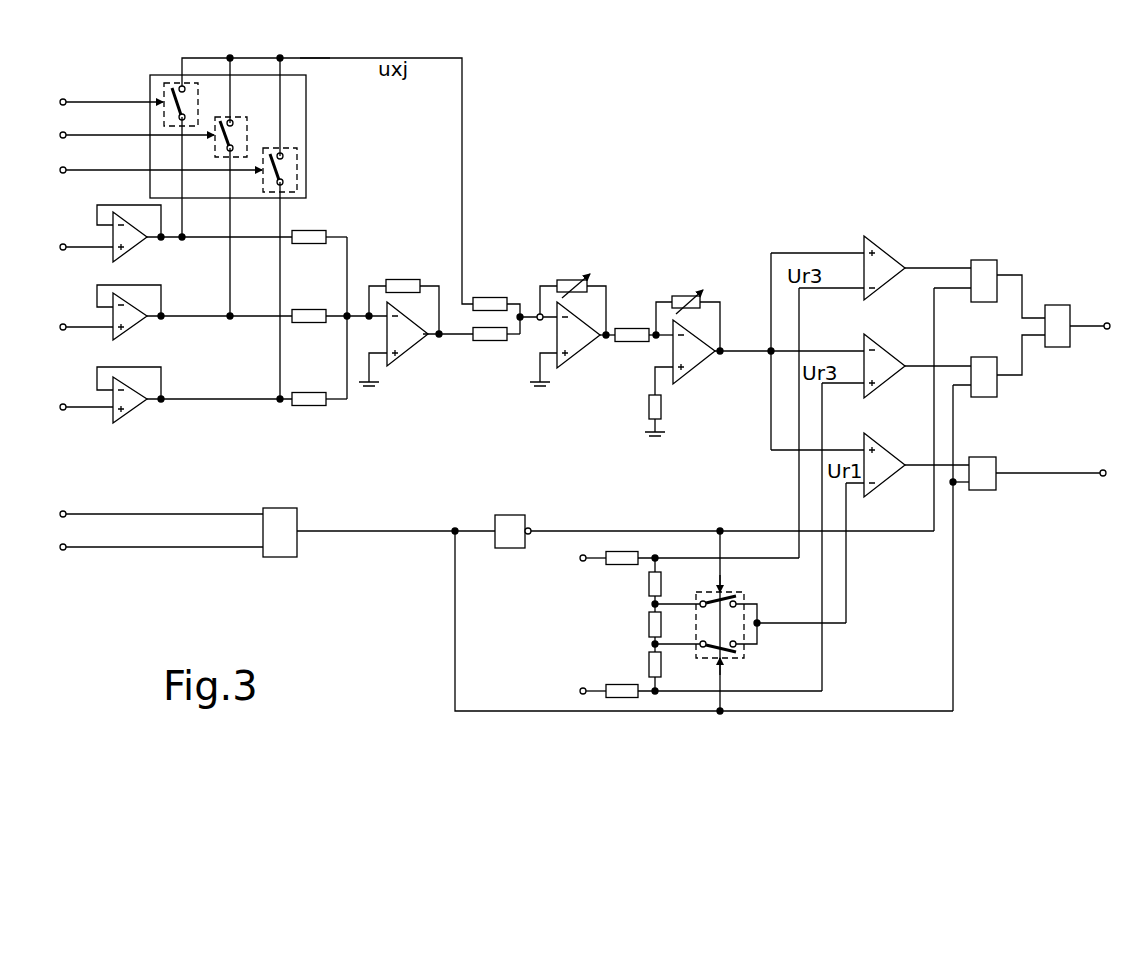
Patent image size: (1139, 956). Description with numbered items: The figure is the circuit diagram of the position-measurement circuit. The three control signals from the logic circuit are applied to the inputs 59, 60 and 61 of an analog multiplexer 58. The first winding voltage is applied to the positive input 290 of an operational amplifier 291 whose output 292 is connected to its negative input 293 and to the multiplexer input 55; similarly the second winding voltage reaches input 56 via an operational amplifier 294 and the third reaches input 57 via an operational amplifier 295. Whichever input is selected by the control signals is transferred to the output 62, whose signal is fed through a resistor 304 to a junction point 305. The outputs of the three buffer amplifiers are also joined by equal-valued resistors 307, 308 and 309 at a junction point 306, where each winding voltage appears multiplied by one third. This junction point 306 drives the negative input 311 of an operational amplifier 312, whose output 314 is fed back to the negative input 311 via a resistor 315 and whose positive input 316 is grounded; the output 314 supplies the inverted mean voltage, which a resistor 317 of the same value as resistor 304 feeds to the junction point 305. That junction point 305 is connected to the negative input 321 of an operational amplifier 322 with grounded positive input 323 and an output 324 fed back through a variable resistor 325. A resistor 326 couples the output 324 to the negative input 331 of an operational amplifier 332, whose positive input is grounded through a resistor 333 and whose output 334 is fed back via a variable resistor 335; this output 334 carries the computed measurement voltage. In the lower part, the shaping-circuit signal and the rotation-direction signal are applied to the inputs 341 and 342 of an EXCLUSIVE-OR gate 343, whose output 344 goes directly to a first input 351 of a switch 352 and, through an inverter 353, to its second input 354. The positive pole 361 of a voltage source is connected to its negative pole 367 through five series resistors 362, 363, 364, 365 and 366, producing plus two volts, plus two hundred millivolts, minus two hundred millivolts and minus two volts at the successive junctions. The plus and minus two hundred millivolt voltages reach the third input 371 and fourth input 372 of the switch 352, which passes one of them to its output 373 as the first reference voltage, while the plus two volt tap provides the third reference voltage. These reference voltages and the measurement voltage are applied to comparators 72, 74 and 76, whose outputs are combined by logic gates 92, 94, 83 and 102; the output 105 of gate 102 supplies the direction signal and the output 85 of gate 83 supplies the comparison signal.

The input of the analog multiplexer 55 is at (184, 202).
The input of the analog multiplexer 56 is at (232, 202).
The input of the analog multiplexer 57 is at (282, 202).
The analog multiplexer 58 is at (306, 118).
The input of the analog multiplexer 59 is at (113, 100).
The input of the analog multiplexer 60 is at (137, 132).
The input of the analog multiplexer 61 is at (162, 167).
The output of the analog multiplexer 62 is at (283, 57).
The comparator 72 is at (888, 263).
The comparator 74 is at (888, 357).
The comparator 76 is at (888, 455).
The logic gate 83 is at (990, 458).
The output of the gate 85 is at (996, 492).
The logic gate 92 is at (1000, 263).
The logic gate 94 is at (990, 355).
The logic gate 102 is at (1067, 349).
The output of the gate 105 is at (1078, 322).
The positive input of the operational amplifier 290 is at (110, 250).
The operational amplifier 291 is at (131, 250).
The output of the operational amplifier 292 is at (152, 240).
The negative input of the operational amplifier 293 is at (107, 225).
The operational amplifier 294 is at (136, 328).
The operational amplifier 295 is at (132, 412).
The resistor 304 is at (488, 297).
The junction point 305 is at (522, 311).
The junction point 306 is at (350, 302).
The resistor 307 is at (322, 231).
The resistor 308 is at (306, 309).
The resistor 309 is at (306, 392).
The negative input of the operational amplifier 311 is at (372, 330).
The operational amplifier 312 is at (405, 358).
The output of the operational amplifier 314 is at (430, 342).
The resistor 315 is at (411, 279).
The positive input of the operational amplifier 316 is at (381, 388).
The resistor 317 is at (490, 342).
The negative input of the operational amplifier 321 is at (540, 332).
The operational amplifier 322 is at (583, 360).
The positive input of the operational amplifier 323 is at (550, 388).
The output of the operational amplifier 324 is at (606, 340).
The variable resistor 325 is at (573, 287).
The resistor 326 is at (633, 328).
The negative input of the operational amplifier 331 is at (660, 340).
The operational amplifier 332 is at (695, 372).
The resistor 333 is at (663, 413).
The output of the operational amplifier 334 is at (720, 355).
The variable resistor 335 is at (688, 298).
The input of the EXCLUSIVE-OR gate 341 is at (236, 514).
The input of the EXCLUSIVE-OR gate 342 is at (233, 548).
The EXCLUSIVE-OR gate 343 is at (281, 508).
The output of the EXCLUSIVE-OR gate 344 is at (300, 540).
The first input of the switch 351 is at (721, 660).
The switch 352 is at (748, 600).
The inverter 353 is at (528, 515).
The second input of the switch 354 is at (724, 600).
The positive pole of the voltage source 361 is at (584, 567).
The resistor 362 is at (621, 551).
The resistor 363 is at (643, 585).
The resistor 364 is at (643, 632).
The resistor 365 is at (671, 673).
The resistor 366 is at (626, 700).
The negative pole of the voltage source 367 is at (583, 688).
The third input of the switch 371 is at (690, 600).
The fourth input of the switch 372 is at (718, 712).
The output of the switch 373 is at (761, 626).